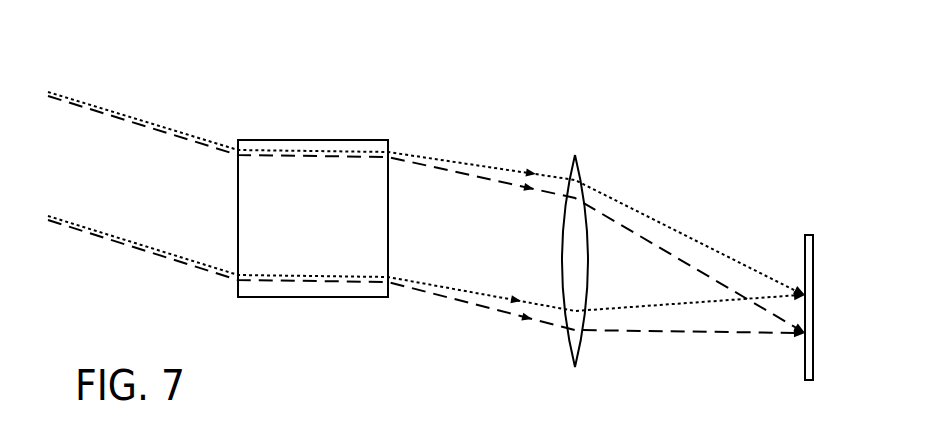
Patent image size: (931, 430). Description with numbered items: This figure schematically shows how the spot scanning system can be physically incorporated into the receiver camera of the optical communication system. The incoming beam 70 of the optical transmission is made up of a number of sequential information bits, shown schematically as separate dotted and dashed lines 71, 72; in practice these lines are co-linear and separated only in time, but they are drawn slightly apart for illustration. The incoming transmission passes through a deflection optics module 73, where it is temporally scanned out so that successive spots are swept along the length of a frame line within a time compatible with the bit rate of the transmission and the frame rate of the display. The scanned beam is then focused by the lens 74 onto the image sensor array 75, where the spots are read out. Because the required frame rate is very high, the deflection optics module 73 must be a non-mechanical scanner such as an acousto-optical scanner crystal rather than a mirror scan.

The incoming beam 70 is at (62, 170).
The dotted line 71 is at (110, 108).
The dashed line 72 is at (186, 135).
The deflection optics module 73 is at (320, 140).
The lens 74 is at (575, 155).
The image sensor array 75 is at (810, 235).